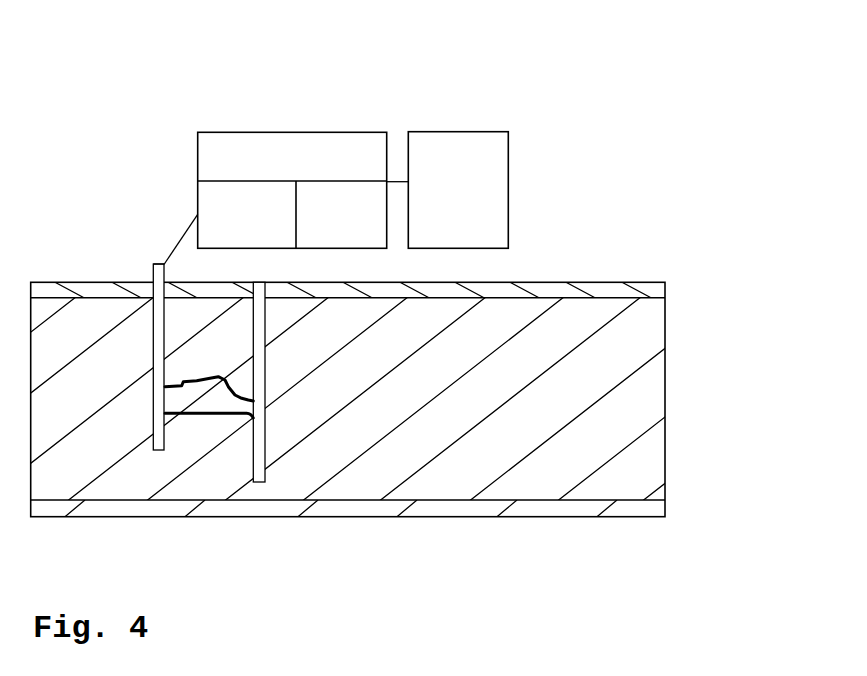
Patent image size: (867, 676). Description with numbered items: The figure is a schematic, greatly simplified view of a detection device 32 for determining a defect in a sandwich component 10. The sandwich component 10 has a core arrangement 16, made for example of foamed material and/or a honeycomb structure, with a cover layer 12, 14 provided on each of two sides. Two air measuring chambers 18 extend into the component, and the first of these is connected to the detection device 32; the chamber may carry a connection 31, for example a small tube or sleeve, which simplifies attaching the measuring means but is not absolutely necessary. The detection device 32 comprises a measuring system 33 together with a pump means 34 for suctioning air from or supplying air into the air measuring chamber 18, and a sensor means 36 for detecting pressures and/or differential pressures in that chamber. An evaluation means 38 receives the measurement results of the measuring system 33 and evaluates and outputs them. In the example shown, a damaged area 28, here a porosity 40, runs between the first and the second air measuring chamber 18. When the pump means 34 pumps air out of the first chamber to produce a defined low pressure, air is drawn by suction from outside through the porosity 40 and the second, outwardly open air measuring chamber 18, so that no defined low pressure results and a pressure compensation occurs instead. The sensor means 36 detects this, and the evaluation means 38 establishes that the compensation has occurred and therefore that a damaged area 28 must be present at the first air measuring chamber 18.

The sandwich component 10 is at (610, 259).
The cover layer 12 is at (653, 282).
The cover layer 14 is at (645, 517).
The core arrangement 16 is at (630, 350).
The air measuring chamber 18 is at (153, 350).
The damaged area 28 is at (214, 410).
The connection 31 is at (153, 264).
The detection device 32 is at (357, 124).
The measuring system 33 is at (264, 148).
The pump means 34 is at (230, 214).
The sensor means 36 is at (363, 214).
The evaluation means 38 is at (497, 165).
The porosity 40 is at (196, 398).